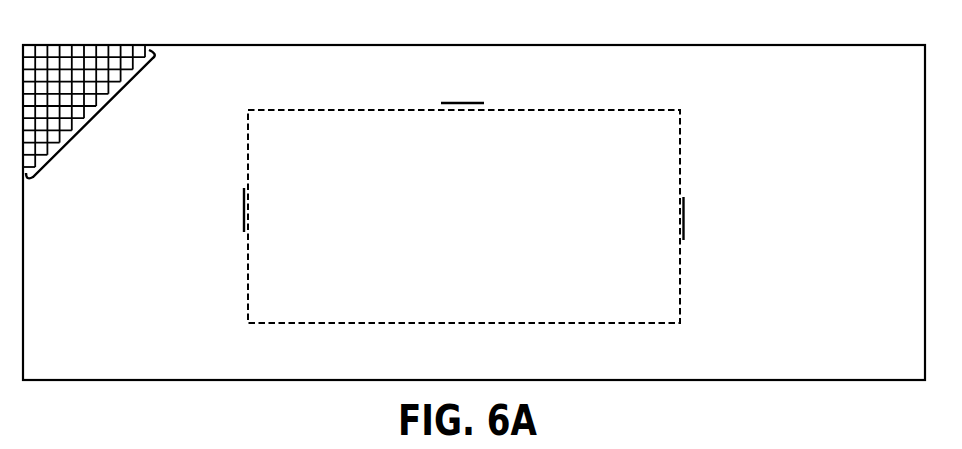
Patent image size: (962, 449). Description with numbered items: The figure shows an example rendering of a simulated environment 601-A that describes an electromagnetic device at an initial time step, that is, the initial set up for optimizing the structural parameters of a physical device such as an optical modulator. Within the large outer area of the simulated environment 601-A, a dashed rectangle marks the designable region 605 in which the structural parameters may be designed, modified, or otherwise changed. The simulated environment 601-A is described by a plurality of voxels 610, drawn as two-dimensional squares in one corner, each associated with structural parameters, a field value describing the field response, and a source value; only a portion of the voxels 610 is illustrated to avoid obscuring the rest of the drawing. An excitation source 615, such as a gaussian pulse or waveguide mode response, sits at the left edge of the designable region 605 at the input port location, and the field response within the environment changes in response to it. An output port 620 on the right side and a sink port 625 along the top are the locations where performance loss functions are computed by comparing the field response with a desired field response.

The simulated environment 601-A is at (85, 35).
The designable region 605 is at (295, 146).
The plurality of voxels 610 is at (95, 120).
The excitation source 615 is at (242, 240).
The output port 620 is at (682, 187).
The sink port 625 is at (436, 103).